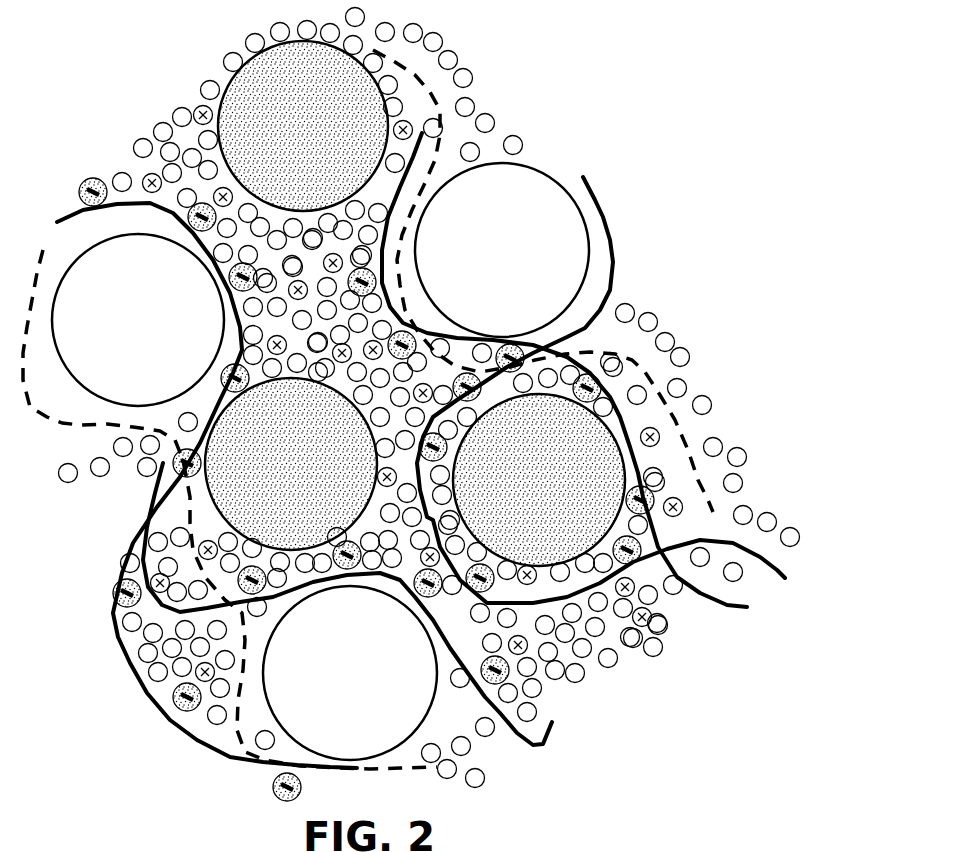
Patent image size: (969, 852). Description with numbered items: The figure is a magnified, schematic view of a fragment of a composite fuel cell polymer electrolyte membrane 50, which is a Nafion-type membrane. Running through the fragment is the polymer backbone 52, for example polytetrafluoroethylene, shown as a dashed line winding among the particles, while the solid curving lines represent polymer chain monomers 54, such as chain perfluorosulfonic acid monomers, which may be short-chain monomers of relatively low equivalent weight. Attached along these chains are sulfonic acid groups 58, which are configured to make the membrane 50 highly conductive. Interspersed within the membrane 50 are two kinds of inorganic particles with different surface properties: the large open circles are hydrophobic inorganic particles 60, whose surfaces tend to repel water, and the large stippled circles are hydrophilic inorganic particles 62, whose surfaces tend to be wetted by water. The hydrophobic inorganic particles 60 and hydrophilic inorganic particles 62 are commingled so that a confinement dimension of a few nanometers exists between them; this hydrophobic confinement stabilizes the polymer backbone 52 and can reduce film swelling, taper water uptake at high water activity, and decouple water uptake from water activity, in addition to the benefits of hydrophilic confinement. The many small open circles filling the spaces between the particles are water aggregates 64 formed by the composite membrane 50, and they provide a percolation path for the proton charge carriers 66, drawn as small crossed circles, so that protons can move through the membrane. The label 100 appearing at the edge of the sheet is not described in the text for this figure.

The composite fuel cell polymer electrolyte membrane 50 is at (622, 56).
The polymer backbone 52 is at (700, 433).
The polymer chain monomers 54 is at (213, 737).
The sulfonic acid groups 58 is at (92, 177).
The hydrophobic inorganic particles 60 is at (124, 334).
The hydrophilic inorganic particles 62 is at (289, 137).
The water aggregates 64 is at (613, 666).
The proton charge carriers 66 is at (683, 508).
The partial reference (cut off) 100 is at (667, 847).